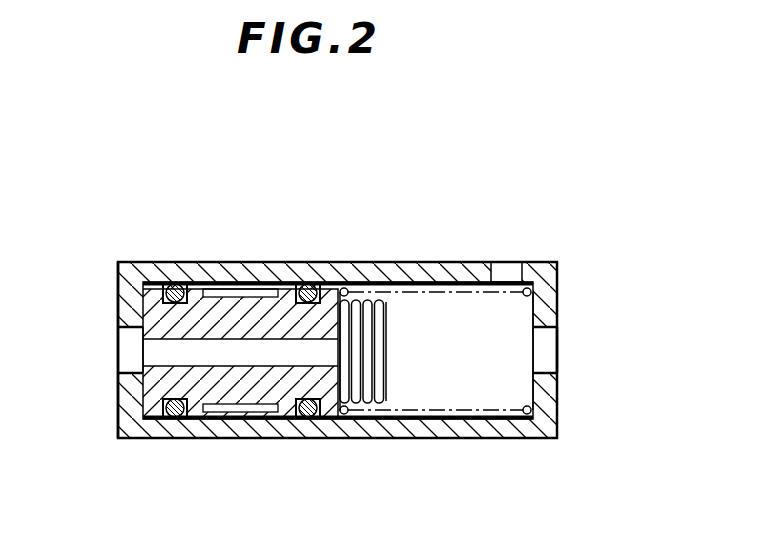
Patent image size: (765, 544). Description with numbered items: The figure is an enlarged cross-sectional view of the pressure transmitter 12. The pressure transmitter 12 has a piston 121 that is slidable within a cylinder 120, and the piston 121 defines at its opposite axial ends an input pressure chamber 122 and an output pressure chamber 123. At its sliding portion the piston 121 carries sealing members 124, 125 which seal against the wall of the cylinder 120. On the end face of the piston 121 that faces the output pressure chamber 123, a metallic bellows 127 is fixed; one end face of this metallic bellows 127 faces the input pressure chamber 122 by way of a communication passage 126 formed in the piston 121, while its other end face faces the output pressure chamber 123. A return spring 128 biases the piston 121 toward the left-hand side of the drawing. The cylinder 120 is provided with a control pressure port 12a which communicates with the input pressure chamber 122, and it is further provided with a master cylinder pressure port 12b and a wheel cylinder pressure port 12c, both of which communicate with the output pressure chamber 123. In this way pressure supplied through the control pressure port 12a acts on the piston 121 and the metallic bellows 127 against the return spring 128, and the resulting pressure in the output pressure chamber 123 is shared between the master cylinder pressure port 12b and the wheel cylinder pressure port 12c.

The pressure transmitter 12 is at (243, 202).
The control pressure port 12a is at (128, 353).
The master cylinder pressure port 12b is at (512, 270).
The wheel cylinder pressure port 12c is at (548, 352).
The cylinder 120 is at (446, 273).
The piston 121 is at (268, 312).
The input pressure chamber 122 is at (132, 296).
The output pressure chamber 123 is at (490, 385).
The sealing member 124 is at (174, 285).
The sealing member 125 is at (309, 418).
The communication passage 126 is at (175, 358).
The metallic bellows 127 is at (363, 297).
The return spring 128 is at (410, 413).